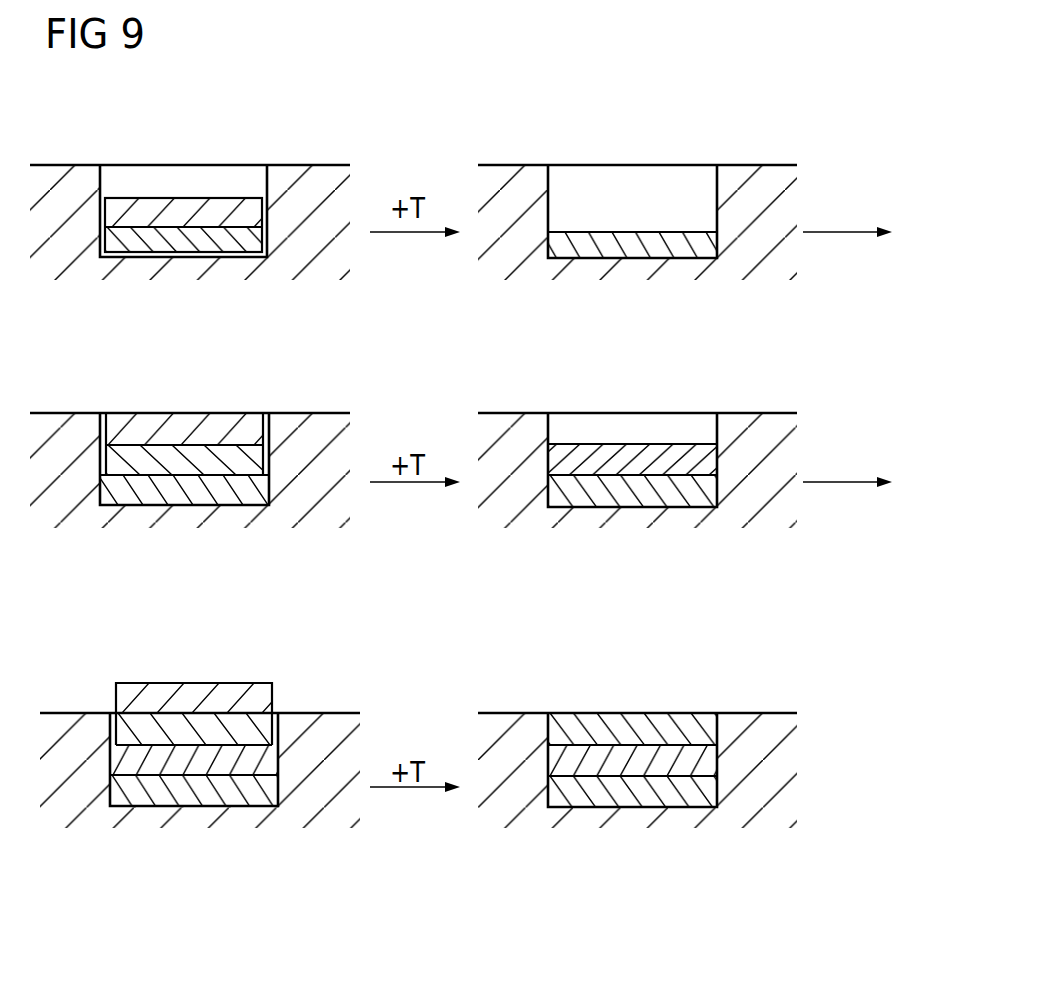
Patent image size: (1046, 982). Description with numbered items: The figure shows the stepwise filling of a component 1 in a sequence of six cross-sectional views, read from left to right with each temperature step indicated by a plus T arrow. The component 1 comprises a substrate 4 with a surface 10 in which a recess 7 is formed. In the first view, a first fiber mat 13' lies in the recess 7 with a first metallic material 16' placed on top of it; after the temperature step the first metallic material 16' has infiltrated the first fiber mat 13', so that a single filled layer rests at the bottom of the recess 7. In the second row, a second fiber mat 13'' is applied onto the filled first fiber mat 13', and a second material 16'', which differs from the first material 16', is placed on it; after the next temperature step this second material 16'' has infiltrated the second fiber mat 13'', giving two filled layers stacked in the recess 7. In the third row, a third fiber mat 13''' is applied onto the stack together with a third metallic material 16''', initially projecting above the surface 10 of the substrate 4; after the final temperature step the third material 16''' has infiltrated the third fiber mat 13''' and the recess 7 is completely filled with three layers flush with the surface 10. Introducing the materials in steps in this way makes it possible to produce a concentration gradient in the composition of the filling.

The component 1 is at (152, 135).
The substrate 4 is at (322, 182).
The recess 7 is at (253, 162).
The surface 10 is at (71, 165).
The first fiber mat 13' is at (183, 273).
The first metallic material 16' is at (183, 169).
The second fiber mat 13'' is at (184, 415).
The second metallic material 16'' is at (184, 415).
The third fiber mat 13''' is at (194, 690).
The third metallic material 16''' is at (194, 681).